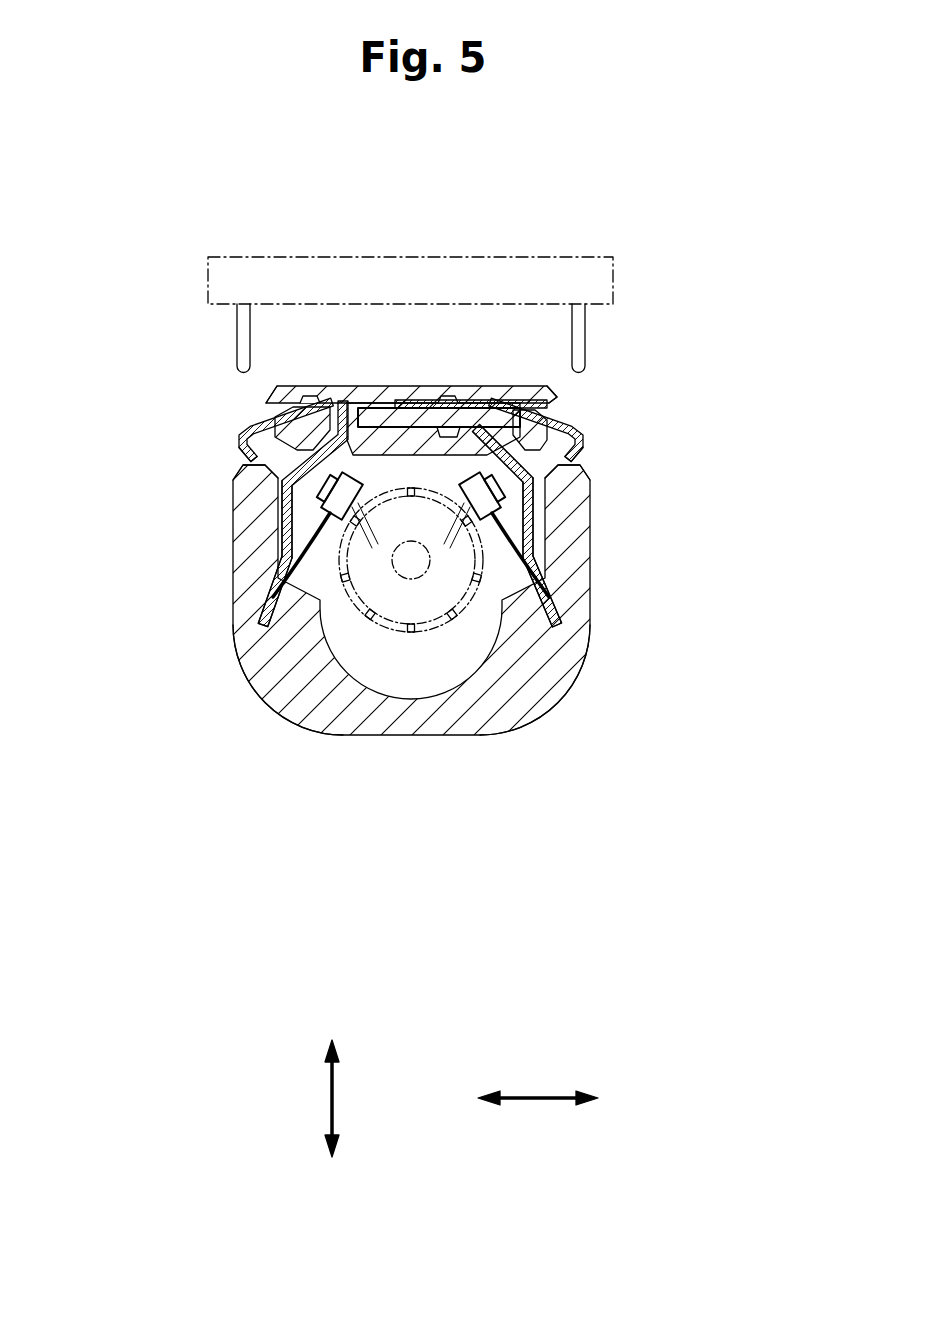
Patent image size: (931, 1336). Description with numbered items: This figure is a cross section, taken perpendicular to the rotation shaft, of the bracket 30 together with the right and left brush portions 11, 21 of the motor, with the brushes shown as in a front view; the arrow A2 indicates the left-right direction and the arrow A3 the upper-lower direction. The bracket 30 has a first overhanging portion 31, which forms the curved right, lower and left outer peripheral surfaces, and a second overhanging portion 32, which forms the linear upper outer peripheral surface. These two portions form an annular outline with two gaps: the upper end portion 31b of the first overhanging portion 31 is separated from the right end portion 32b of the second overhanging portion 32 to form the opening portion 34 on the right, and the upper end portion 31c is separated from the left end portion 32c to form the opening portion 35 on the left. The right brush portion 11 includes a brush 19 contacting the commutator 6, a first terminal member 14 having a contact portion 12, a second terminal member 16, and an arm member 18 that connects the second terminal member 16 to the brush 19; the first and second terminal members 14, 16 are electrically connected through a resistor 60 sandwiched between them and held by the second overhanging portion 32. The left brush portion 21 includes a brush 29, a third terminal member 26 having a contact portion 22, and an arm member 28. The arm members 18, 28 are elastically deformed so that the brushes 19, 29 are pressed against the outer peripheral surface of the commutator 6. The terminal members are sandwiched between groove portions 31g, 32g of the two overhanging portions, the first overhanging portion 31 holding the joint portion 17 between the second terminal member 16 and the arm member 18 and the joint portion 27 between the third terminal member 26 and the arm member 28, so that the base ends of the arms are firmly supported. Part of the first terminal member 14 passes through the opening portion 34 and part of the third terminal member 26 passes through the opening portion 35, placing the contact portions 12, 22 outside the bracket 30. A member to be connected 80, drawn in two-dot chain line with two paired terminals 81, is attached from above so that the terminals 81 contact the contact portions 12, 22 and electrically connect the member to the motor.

The commutator 6 is at (441, 645).
The right brush portion 11 is at (630, 544).
The contact portion 12 is at (644, 408).
The first terminal member 14 is at (447, 387).
The second terminal member 16 is at (533, 502).
The joint portion 17 is at (553, 595).
The arm member 18 is at (540, 535).
The brush 19 is at (550, 690).
The left brush portion 21 is at (205, 528).
The contact portion 22 is at (199, 389).
The third terminal member 26 is at (290, 508).
The joint portion 27 is at (268, 552).
The arm member 28 is at (328, 568).
The brush 29 is at (318, 640).
The bracket 30 is at (420, 690).
The first overhanging portion 31 is at (420, 666).
The upper end portion 31b is at (580, 474).
The upper end portion 31c is at (237, 473).
The groove portion 31g is at (257, 662).
The second overhanging portion 32 is at (407, 287).
The right end portion 32b is at (545, 387).
The left end portion 32c is at (283, 387).
The groove portion 32g is at (307, 387).
The opening portion 34 is at (550, 444).
The opening portion 35 is at (270, 442).
The resistor 60 is at (388, 410).
The member to be connected 80 is at (585, 250).
The terminals 81 is at (240, 303).
The arrow A2 is at (553, 1097).
The arrow A3 is at (328, 1090).